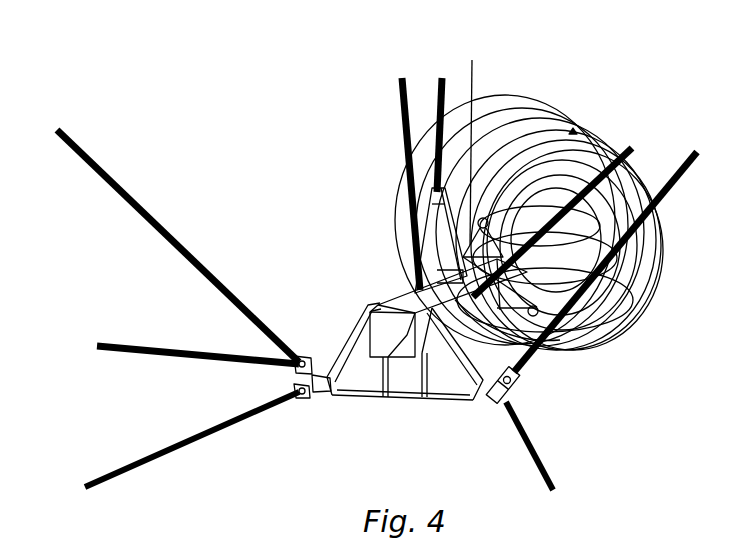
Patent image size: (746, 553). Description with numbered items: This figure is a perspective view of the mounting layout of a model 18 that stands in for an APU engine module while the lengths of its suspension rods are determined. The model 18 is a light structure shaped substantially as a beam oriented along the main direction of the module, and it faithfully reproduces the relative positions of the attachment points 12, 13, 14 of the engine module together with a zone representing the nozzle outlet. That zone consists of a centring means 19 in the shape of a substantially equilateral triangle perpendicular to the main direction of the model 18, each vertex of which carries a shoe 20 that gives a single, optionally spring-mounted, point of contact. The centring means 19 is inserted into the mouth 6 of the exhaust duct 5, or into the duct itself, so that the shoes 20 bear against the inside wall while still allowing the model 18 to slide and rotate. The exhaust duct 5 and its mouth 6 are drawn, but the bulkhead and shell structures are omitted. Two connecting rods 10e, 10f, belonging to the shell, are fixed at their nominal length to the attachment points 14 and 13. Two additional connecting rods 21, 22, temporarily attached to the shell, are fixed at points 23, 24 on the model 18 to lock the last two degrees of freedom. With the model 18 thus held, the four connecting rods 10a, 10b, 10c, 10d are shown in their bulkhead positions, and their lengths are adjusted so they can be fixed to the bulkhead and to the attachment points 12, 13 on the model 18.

The exhaust duct 5 is at (565, 125).
The mouth of the exhaust duct 6 is at (436, 188).
The connecting rod 10a is at (683, 174).
The connecting rod 10b is at (107, 186).
The connecting rod 10c is at (540, 462).
The connecting rod 10d is at (148, 466).
The connecting rod 10e is at (127, 347).
The connecting rod 10f is at (442, 79).
The attachment point 12 is at (490, 393).
The attachment point 13 is at (311, 396).
The attachment point 14 is at (472, 60).
The model 18 is at (403, 372).
The centring means 19 is at (604, 160).
The shoe 20 is at (573, 128).
The additional connecting rod 21 is at (400, 140).
The additional connecting rod 22 is at (606, 158).
The fixing point 23 is at (413, 278).
The fixing point 24 is at (593, 250).